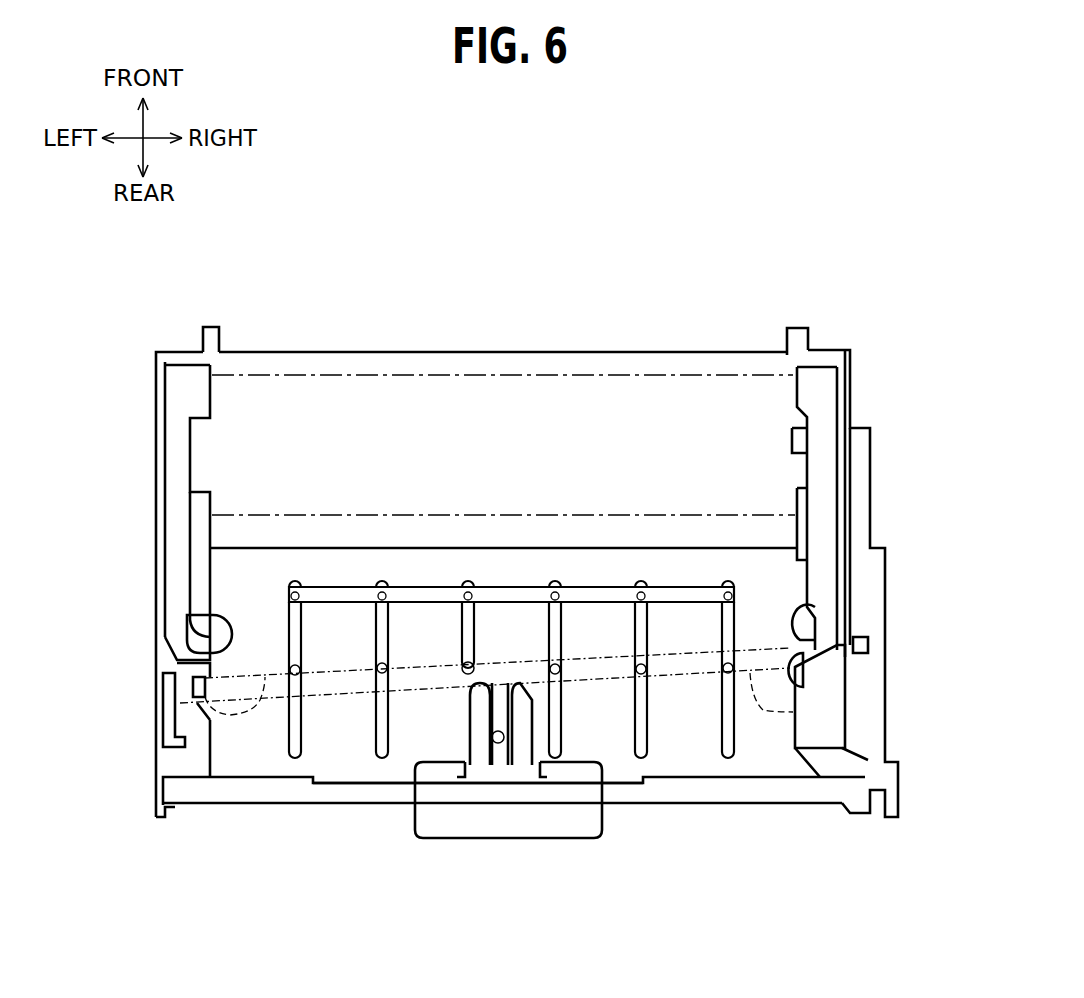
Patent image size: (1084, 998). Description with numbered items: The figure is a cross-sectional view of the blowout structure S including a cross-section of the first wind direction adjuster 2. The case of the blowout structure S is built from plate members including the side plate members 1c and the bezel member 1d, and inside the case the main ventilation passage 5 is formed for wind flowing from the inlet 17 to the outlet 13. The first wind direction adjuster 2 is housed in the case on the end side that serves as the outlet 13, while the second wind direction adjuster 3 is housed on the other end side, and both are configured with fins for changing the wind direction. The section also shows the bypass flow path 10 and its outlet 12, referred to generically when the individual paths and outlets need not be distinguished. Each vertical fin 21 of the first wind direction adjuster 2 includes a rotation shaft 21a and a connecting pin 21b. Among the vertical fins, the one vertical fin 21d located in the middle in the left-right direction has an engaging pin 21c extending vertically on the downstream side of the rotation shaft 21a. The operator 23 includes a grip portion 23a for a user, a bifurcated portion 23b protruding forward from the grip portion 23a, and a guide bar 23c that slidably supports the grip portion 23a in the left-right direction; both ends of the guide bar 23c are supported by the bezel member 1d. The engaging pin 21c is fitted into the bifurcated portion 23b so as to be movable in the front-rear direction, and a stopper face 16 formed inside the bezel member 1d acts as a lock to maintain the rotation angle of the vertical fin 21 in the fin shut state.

The blowout structure S is at (579, 279).
The side plate member 1c is at (152, 363).
The bezel member 1d is at (153, 808).
The first wind direction adjuster 2 is at (242, 742).
The second wind direction adjuster 3 is at (720, 440).
The main ventilation passage 5 is at (349, 646).
The bypass flow path 10 is at (180, 463).
The outlet 12 is at (215, 628).
The outlet 13 is at (810, 760).
The stopper face 16 is at (200, 683).
The inlet 17 is at (787, 340).
The vertical fin 21 is at (195, 692).
The rotation shaft 21a is at (295, 670).
The connecting pin 21b is at (290, 585).
The engaging pin 21c is at (430, 765).
The vertical fin 21d is at (492, 740).
The operator 23 is at (703, 918).
The grip portion 23a is at (463, 822).
The bifurcated portion 23b is at (518, 730).
The guide bar 23c is at (660, 787).